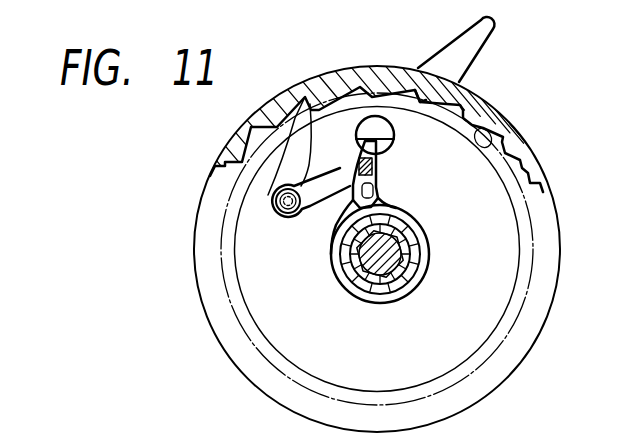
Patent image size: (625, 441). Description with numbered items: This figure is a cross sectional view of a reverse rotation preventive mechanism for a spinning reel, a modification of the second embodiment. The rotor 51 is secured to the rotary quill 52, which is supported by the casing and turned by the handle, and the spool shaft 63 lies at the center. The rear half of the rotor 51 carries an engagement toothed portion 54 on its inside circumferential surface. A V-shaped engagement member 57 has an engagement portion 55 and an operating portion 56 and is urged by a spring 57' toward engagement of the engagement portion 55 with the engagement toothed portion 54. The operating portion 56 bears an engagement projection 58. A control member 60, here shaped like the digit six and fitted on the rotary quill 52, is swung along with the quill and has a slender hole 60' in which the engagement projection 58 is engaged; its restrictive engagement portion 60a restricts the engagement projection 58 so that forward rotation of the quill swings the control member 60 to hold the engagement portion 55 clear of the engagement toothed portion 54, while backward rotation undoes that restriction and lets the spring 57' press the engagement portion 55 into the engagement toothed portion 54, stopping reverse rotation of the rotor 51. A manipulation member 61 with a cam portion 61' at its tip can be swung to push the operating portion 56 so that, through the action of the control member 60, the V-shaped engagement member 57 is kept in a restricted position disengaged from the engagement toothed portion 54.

The rotor 51 is at (517, 363).
The rotary quill 52 is at (412, 267).
The engagement toothed portion 54 is at (475, 125).
The engagement portion 55 is at (306, 96).
The operating portion 56 is at (370, 117).
The V-shaped engagement member 57 is at (283, 114).
The spring 57' is at (227, 188).
The engagement projection 58 is at (377, 167).
The control member 60 is at (288, 250).
The slender hole 60' is at (492, 199).
The restrictive engagement portion 60a is at (340, 172).
The manipulation member 61 is at (488, 46).
The cam portion 61' is at (427, 56).
The spool shaft 63 is at (400, 252).